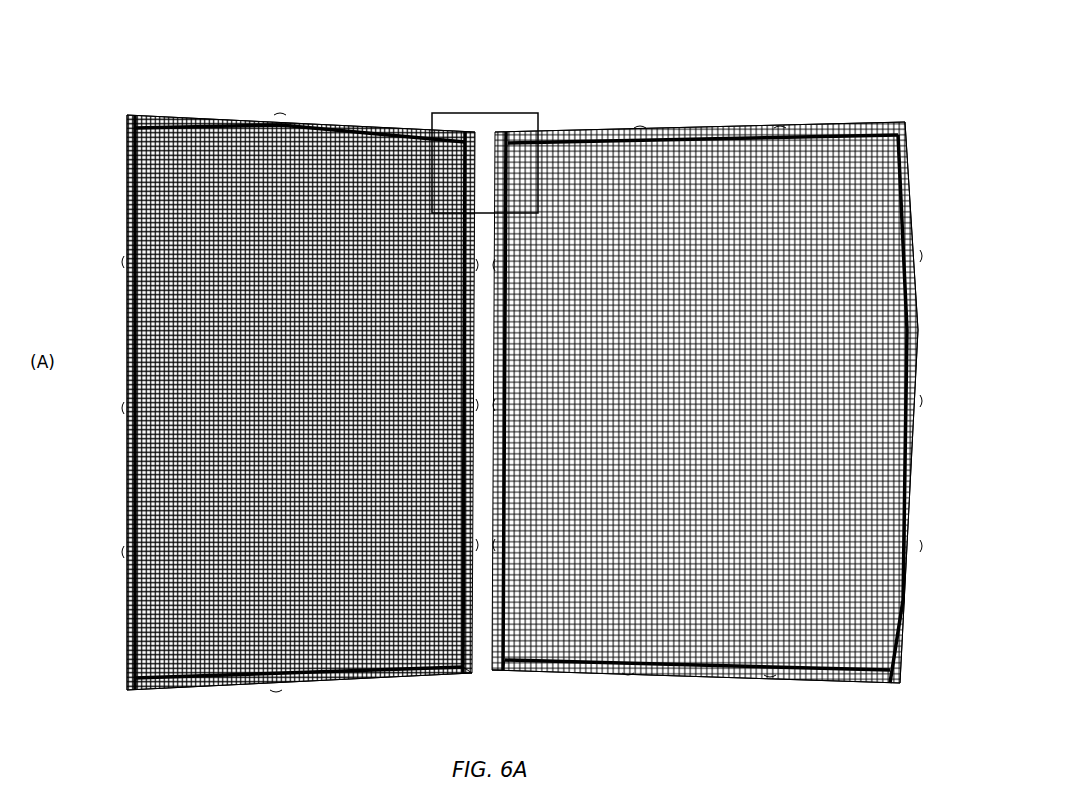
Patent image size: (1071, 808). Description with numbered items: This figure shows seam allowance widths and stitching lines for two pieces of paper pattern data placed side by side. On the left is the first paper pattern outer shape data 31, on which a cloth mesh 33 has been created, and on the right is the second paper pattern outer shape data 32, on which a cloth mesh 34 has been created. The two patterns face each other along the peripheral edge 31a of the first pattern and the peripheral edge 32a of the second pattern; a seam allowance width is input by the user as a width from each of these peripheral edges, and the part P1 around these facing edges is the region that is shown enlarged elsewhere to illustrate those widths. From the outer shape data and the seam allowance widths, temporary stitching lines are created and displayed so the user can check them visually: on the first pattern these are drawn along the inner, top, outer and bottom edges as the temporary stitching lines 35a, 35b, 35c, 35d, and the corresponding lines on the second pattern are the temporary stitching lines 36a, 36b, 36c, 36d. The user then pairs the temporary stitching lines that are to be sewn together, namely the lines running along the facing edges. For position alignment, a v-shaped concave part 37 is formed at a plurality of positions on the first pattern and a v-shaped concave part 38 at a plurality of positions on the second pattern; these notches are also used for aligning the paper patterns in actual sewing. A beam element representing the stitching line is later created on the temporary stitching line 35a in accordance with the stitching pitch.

The first paper pattern outer shape data 31 is at (318, 112).
The peripheral edge 31a is at (470, 672).
The second paper pattern outer shape data 32 is at (805, 125).
The peripheral edge 32a is at (491, 666).
The cloth mesh 33 is at (214, 128).
The cloth mesh 34 is at (700, 148).
The temporary stitching line 35a is at (462, 138).
The first panel top edge 35b is at (372, 128).
The first panel outer side edge 35c is at (130, 195).
The first panel bottom edge 35d is at (376, 673).
The temporary stitching line 36a is at (498, 140).
The temporary stitching line 36b is at (580, 135).
The temporary stitching line 36c is at (900, 148).
The temporary stitching line 36d is at (590, 673).
The v-shaped concave part 37 is at (280, 118).
The v-shaped concave part 38 is at (640, 130).
The part P1 is at (525, 113).